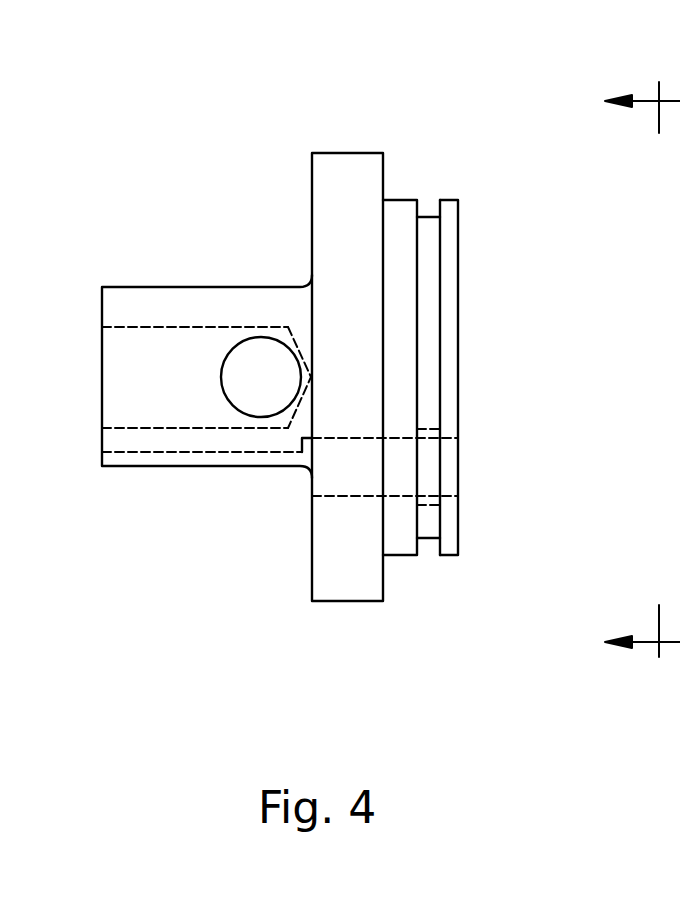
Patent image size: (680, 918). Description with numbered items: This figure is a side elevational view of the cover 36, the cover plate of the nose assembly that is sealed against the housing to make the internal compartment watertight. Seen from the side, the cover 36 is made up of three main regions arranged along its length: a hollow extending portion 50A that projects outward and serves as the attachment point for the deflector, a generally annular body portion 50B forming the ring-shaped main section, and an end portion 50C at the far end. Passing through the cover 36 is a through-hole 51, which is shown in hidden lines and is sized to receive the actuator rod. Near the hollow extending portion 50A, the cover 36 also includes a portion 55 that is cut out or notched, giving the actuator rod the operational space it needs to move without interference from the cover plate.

The cover 36 is at (332, 152).
The hollow extending portion 50A is at (205, 292).
The generally annular body portion 50B is at (385, 177).
The end portion 50C is at (428, 218).
The through-hole 51 is at (357, 497).
The portion 55 is at (193, 460).